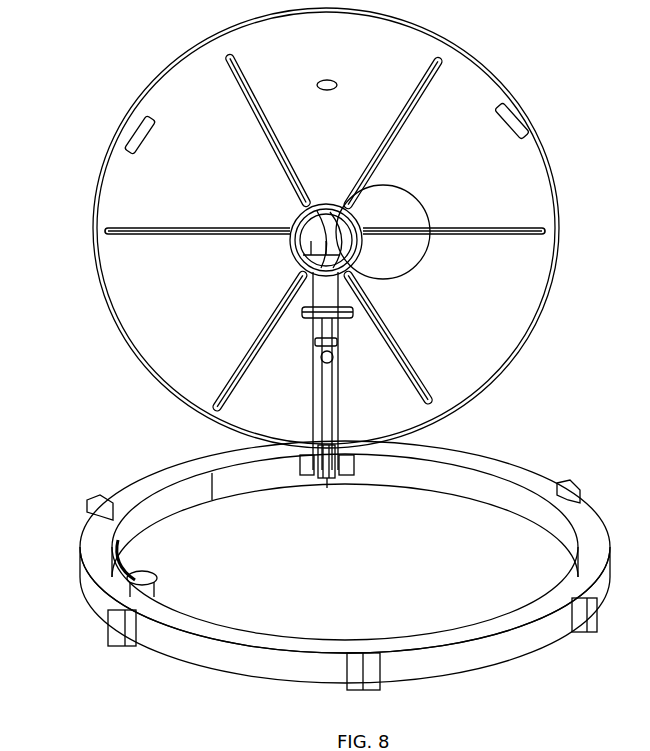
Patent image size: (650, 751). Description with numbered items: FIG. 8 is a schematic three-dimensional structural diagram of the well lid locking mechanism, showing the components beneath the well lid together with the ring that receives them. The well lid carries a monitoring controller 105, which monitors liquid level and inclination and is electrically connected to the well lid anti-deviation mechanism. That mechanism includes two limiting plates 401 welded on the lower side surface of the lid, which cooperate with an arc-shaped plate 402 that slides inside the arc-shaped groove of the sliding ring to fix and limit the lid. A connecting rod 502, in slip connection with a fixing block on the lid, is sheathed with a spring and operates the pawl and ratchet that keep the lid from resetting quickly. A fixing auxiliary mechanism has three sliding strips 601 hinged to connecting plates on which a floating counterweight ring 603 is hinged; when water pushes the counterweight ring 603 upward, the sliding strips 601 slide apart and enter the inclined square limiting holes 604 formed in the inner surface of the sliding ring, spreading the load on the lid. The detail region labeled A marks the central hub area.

The monitoring controller 105 is at (315, 228).
The limiting plate 401 is at (133, 138).
The arc-shaped plate 402 is at (117, 542).
The connecting rod 502 is at (332, 387).
The sliding strip 601 is at (537, 237).
The counterweight ring 603 is at (368, 258).
The square limiting hole 604 is at (208, 491).
The detail view A is at (413, 191).